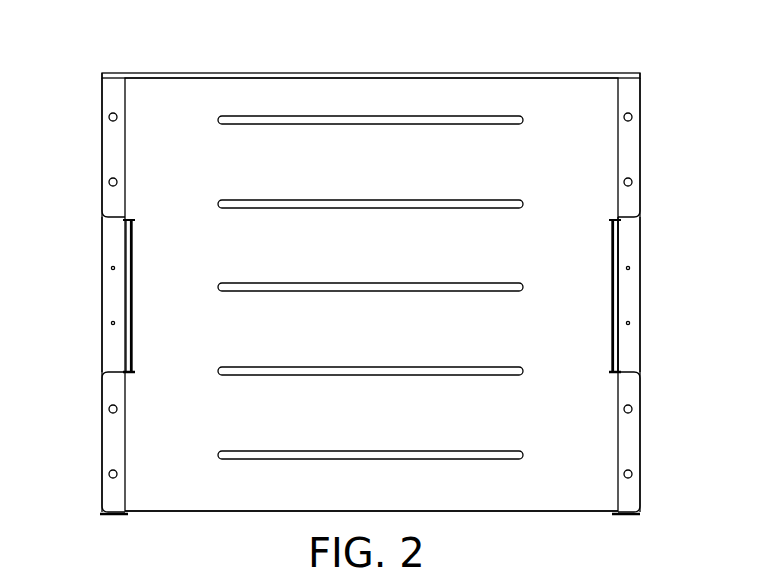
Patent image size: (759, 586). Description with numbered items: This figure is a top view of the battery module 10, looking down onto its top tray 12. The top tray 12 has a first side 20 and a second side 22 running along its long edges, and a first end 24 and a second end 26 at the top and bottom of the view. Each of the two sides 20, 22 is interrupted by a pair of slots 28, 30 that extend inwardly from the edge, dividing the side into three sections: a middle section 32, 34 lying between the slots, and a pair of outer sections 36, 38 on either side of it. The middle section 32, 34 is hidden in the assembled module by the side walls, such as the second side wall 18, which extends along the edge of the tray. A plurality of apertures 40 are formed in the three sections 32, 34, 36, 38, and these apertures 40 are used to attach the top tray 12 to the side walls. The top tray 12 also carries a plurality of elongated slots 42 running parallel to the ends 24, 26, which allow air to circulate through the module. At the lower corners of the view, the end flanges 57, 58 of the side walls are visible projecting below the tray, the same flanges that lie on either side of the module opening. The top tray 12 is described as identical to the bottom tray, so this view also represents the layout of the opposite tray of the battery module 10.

The battery module 10 is at (657, 42).
The top tray 12 is at (551, 110).
The second side wall 18 is at (640, 248).
The first side 20 is at (100, 345).
The second side 22 is at (640, 345).
The first end 24 is at (294, 73).
The second end 26 is at (483, 512).
The slot 28 is at (127, 218).
The slot 30 is at (612, 218).
The middle section 32 is at (112, 307).
The middle section 34 is at (632, 287).
The outer section 36 is at (102, 164).
The outer section 38 is at (628, 155).
The apertures 40 is at (108, 116).
The slots 42 is at (255, 116).
The end flange 57 is at (112, 516).
The end flange 58 is at (638, 515).